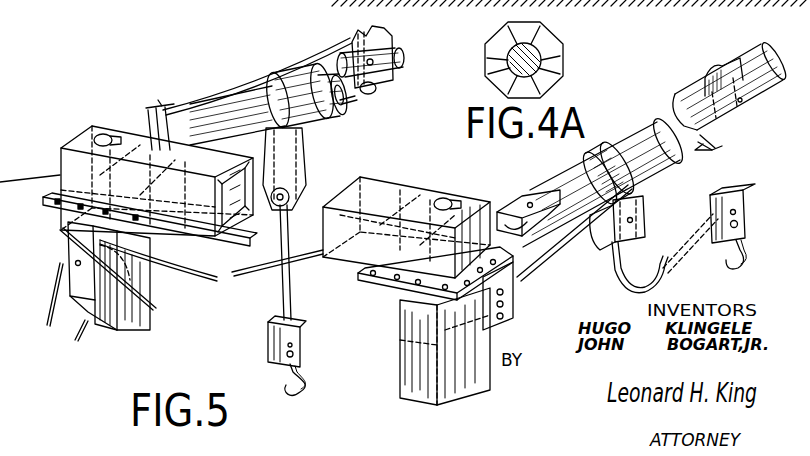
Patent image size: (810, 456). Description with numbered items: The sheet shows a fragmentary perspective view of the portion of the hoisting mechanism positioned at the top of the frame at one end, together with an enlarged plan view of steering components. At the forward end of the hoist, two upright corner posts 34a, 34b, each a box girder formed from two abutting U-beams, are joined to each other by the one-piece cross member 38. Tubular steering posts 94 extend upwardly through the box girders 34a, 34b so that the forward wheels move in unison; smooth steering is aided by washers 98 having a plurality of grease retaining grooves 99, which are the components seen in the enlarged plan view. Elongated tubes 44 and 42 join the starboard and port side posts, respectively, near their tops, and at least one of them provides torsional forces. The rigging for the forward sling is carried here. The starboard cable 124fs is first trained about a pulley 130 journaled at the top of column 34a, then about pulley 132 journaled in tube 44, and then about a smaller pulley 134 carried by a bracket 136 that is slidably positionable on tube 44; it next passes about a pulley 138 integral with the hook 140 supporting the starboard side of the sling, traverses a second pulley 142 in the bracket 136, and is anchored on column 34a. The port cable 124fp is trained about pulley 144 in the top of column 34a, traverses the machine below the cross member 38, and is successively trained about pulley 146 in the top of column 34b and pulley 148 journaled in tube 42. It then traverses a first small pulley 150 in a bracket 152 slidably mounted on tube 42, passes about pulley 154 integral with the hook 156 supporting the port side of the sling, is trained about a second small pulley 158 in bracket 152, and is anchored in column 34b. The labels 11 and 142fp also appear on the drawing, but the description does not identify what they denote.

In FIG. 5, the line of section / direction arrows 11 is at (53, 178).
In FIG. 5, the upright corner post 34a is at (62, 228).
In FIG. 5, the upright corner post 34b is at (404, 343).
In FIG. 5, the cross member 38 is at (80, 142).
In FIG. 5, the elongated tube 42 is at (752, 96).
In FIG. 5, the elongated tube 44 is at (398, 72).
In FIG. 5, the tubular post 94 is at (113, 142).
In FIG. 4A, the washer 98 is at (562, 85).
In FIG. 4A, the grease retaining groove 99 is at (505, 35).
In FIG. 5, the cable 124fp is at (55, 303).
In FIG. 5, the cable 124fs is at (72, 336).
In FIG. 5, the pulley 130 is at (152, 112).
In FIG. 5, the pulley 132 is at (372, 40).
In FIG. 5, the smaller pulley 134 is at (311, 171).
In FIG. 5, the bracket 136 is at (290, 84).
In FIG. 5, the pulley 138 is at (298, 316).
In FIG. 5, the hook 140 is at (306, 393).
In FIG. 5, the second pulley 142 is at (296, 198).
In FIG. 5, the strap 142fp is at (198, 278).
In FIG. 5, the pulley 144 is at (138, 304).
In FIG. 5, the pulley 146 is at (540, 200).
In FIG. 5, the pulley 148 is at (727, 67).
In FIG. 5, the first small pulley 150 is at (637, 212).
In FIG. 5, the bracket 152 is at (618, 138).
In FIG. 5, the pulley 154 is at (710, 210).
In FIG. 5, the hook 156 is at (745, 256).
In FIG. 5, the second small pulley 158 is at (600, 268).